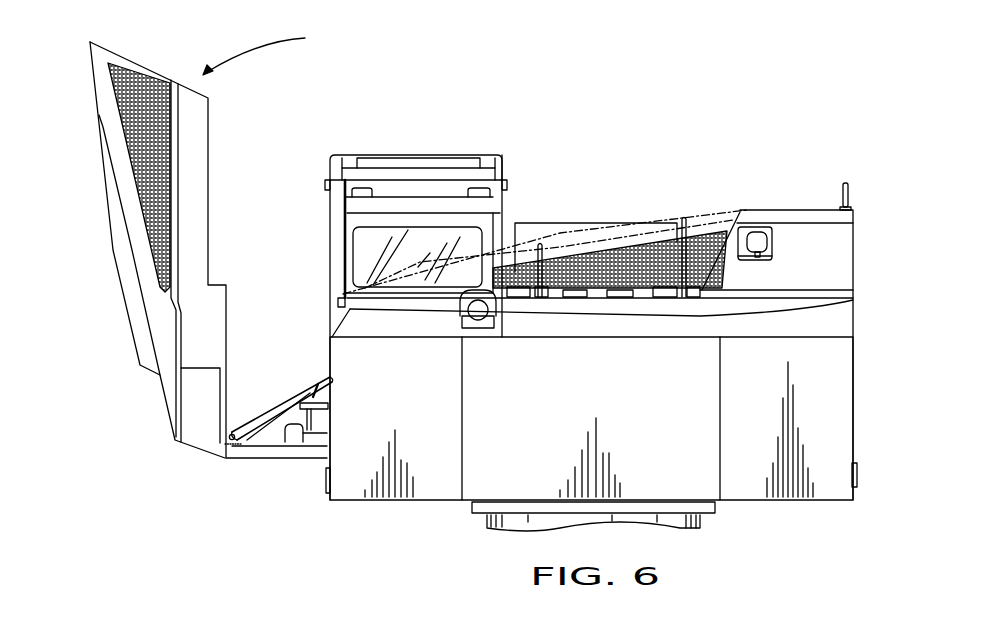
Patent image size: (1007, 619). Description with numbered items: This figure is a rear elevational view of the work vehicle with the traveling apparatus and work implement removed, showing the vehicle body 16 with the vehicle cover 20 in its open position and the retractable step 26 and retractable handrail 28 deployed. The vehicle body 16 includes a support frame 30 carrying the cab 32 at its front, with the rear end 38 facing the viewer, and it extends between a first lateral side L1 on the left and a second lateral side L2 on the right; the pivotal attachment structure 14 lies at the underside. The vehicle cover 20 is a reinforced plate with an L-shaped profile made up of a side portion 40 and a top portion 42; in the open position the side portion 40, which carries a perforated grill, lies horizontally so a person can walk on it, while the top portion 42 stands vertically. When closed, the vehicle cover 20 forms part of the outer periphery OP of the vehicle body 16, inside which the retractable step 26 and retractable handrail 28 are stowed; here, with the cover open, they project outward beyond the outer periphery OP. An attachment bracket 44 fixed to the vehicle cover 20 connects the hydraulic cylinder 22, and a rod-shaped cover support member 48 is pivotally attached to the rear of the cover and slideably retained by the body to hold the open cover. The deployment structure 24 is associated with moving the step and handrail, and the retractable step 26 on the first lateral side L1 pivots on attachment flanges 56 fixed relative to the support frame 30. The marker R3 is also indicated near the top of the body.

The pivotal attachment structure 14 is at (722, 524).
The vehicle body 16 is at (683, 133).
The vehicle cover 20 is at (118, 357).
The hydraulic cylinder 22 is at (333, 428).
The deployment structure 24 is at (278, 372).
The retractable step 26 is at (294, 392).
The retractable handrail 28 is at (328, 243).
The support frame 30 is at (650, 430).
The cab 32 is at (437, 154).
The rear end 38 is at (600, 405).
The side portion 40 is at (240, 453).
The top portion 42 is at (115, 272).
The attachment bracket 44 is at (270, 437).
The cover support member 48 is at (275, 428).
The attachment flange 56 is at (288, 442).
The outer periphery OP is at (531, 237).
The rotation axis R3 is at (838, 197).
The first lateral side L1 is at (327, 483).
The second lateral side L2 is at (857, 438).